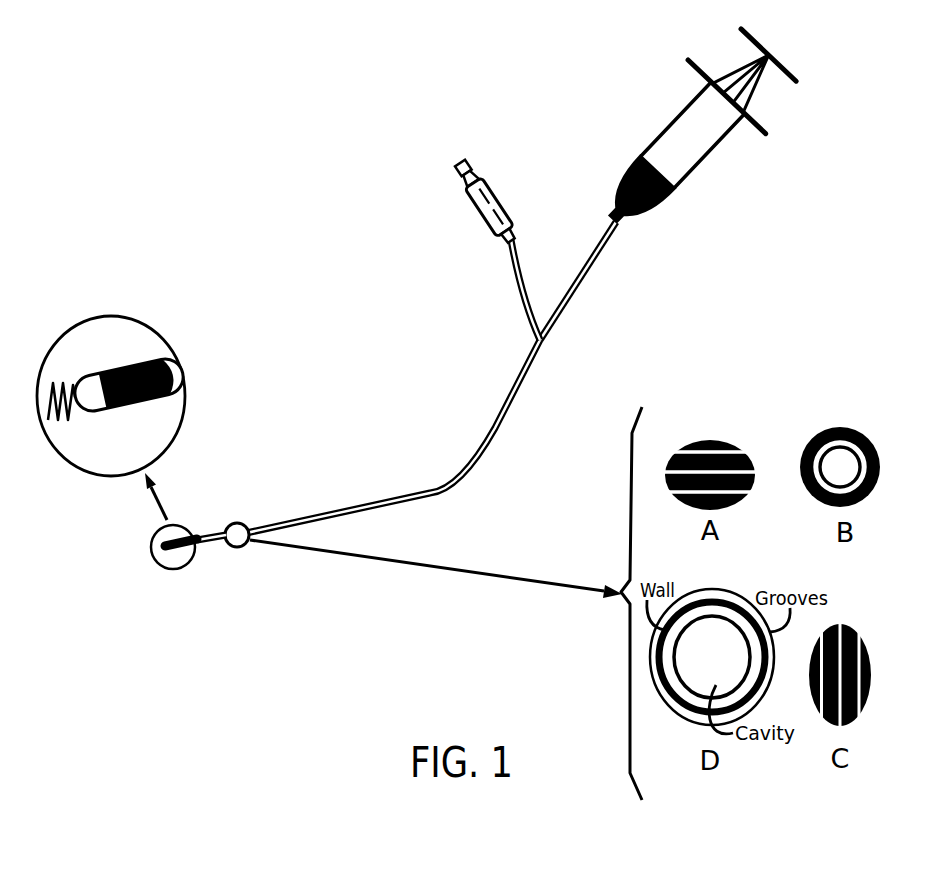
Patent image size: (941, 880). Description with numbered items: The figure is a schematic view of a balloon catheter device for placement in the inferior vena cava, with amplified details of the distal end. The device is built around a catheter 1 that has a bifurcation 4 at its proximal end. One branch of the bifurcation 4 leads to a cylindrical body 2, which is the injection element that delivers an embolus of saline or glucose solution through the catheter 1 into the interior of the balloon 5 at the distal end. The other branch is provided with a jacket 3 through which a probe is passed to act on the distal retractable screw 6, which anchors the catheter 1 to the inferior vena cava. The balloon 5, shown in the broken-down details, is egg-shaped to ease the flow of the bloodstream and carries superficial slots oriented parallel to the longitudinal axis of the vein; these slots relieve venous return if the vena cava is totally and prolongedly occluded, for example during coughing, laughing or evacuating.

The catheter 1 is at (592, 243).
The cylindrical body 2 is at (702, 152).
The jacket 3 is at (453, 167).
The bifurcation 4 is at (493, 433).
The balloon 5 is at (247, 524).
The distal retractable screw 6 is at (130, 380).